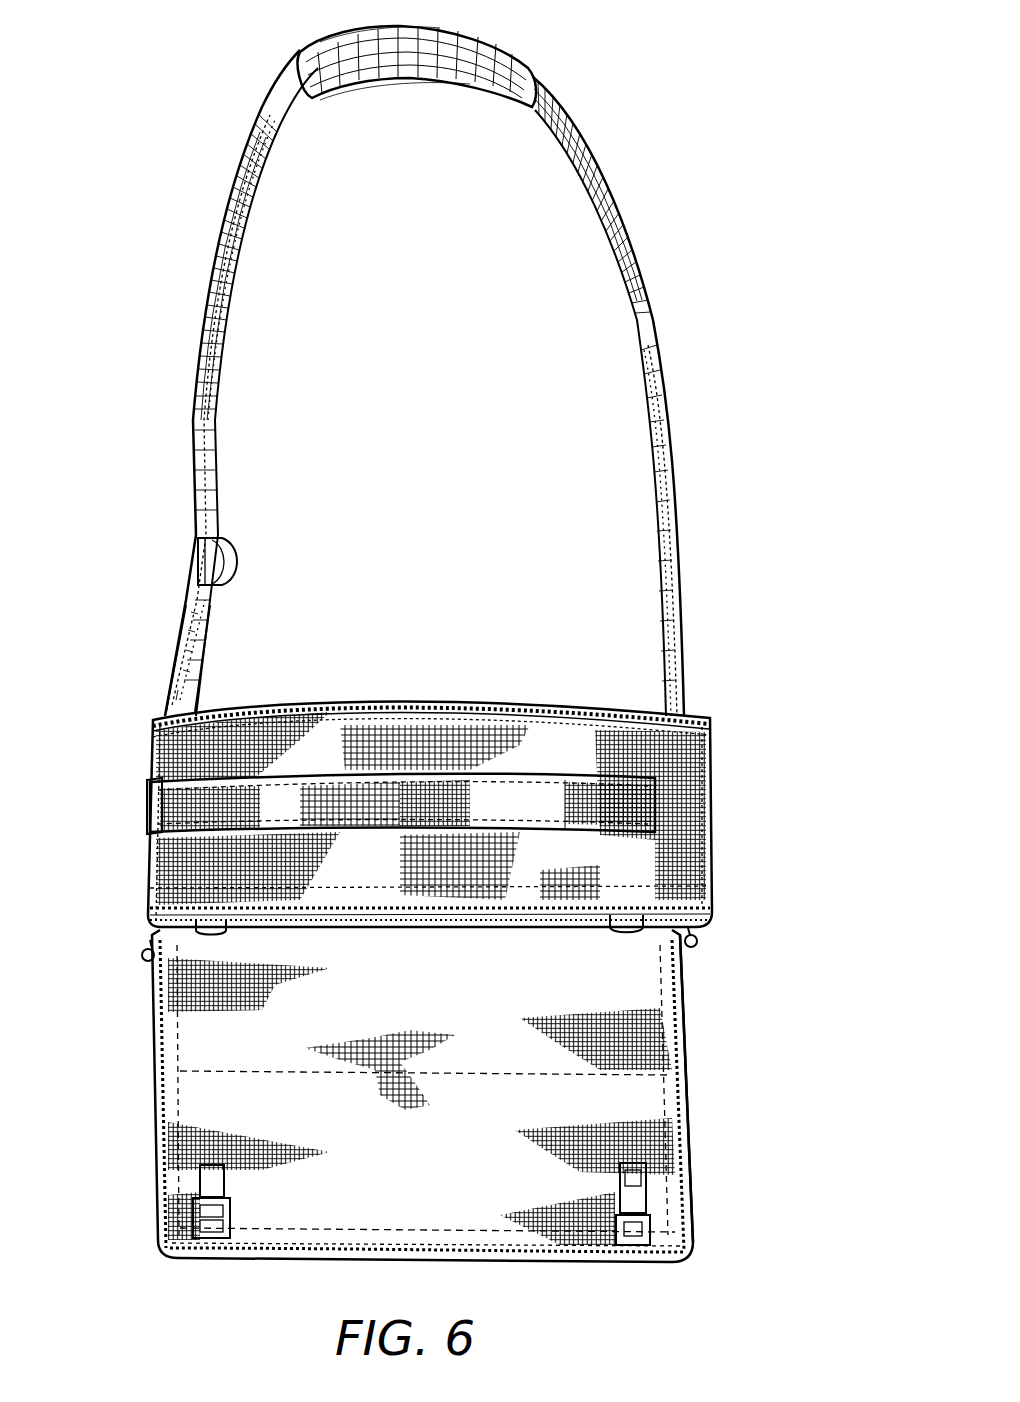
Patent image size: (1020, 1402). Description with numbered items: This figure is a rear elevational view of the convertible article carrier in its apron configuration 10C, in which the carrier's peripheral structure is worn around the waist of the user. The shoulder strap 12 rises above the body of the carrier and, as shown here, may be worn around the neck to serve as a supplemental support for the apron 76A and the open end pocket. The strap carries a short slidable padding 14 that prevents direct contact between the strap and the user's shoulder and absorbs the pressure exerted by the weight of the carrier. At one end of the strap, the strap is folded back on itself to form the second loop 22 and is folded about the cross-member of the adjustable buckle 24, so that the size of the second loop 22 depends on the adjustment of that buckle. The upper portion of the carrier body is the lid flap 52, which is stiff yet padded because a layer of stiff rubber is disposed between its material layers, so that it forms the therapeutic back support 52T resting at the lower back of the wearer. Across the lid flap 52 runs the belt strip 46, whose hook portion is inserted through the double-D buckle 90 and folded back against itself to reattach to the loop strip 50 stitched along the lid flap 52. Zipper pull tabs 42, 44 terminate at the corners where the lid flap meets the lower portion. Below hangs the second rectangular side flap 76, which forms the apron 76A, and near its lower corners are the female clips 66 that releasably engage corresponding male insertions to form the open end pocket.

The apron configuration 10C is at (740, 487).
The shoulder strap 12 is at (237, 278).
The slidable padding 14 is at (395, 78).
The second loop 22 is at (180, 632).
The adjustable buckle 24 is at (225, 540).
The pull tab 42 is at (700, 950).
The pull tab 44 is at (140, 958).
The belt strip 46 is at (130, 822).
The loop strip 50 is at (550, 815).
The lid flap 52 is at (510, 735).
The therapeutic back support 52T is at (288, 684).
The female clips 66 is at (168, 1256).
The second rectangular side flap 76 is at (460, 978).
The apron 76A is at (722, 1112).
The double-D buckle 90 is at (148, 792).